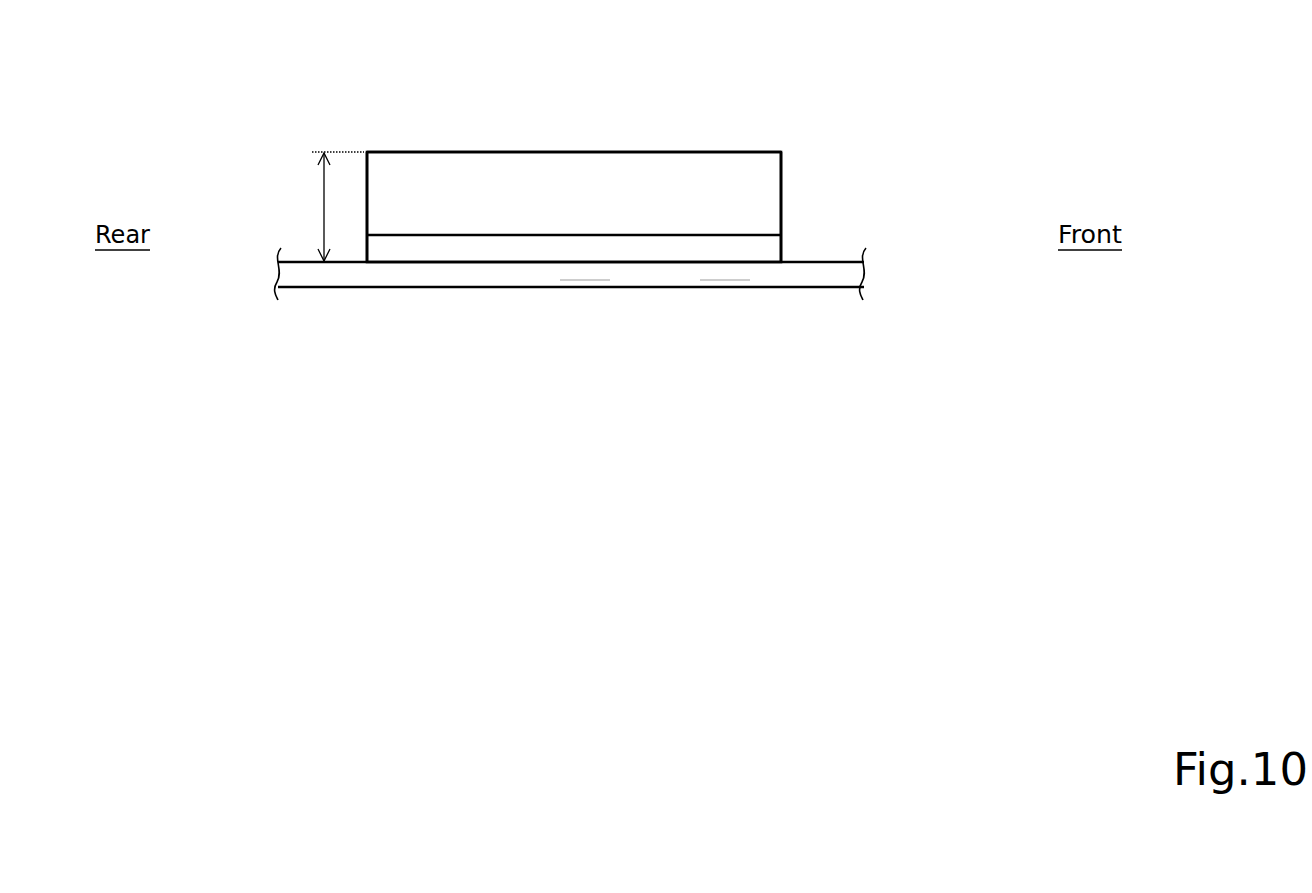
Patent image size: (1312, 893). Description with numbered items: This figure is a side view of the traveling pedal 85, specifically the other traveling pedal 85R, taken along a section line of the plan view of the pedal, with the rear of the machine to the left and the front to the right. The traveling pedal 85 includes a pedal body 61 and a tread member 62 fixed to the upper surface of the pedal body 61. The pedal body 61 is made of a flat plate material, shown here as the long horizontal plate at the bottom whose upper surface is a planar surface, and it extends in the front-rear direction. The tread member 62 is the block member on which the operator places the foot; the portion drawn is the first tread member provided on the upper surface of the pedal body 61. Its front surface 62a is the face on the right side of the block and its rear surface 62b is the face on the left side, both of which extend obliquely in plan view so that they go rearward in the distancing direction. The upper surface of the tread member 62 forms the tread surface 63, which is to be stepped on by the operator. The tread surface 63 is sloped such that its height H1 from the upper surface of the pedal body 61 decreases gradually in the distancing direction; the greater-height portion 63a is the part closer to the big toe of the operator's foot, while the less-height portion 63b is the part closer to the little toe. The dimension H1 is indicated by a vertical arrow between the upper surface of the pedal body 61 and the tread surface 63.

The pedal body 61 is at (468, 287).
The tread member 62 is at (572, 143).
The front surface of the first tread member 62a is at (782, 174).
The rear surface of the first tread member 62b is at (367, 198).
The tread surface 63 is at (497, 161).
The greater-height portion 63a is at (708, 150).
The less-height portion 63b is at (755, 234).
The other traveling pedal 85R is at (585, 305).
The traveling pedal 85 is at (723, 307).
The height H1 is at (322, 208).